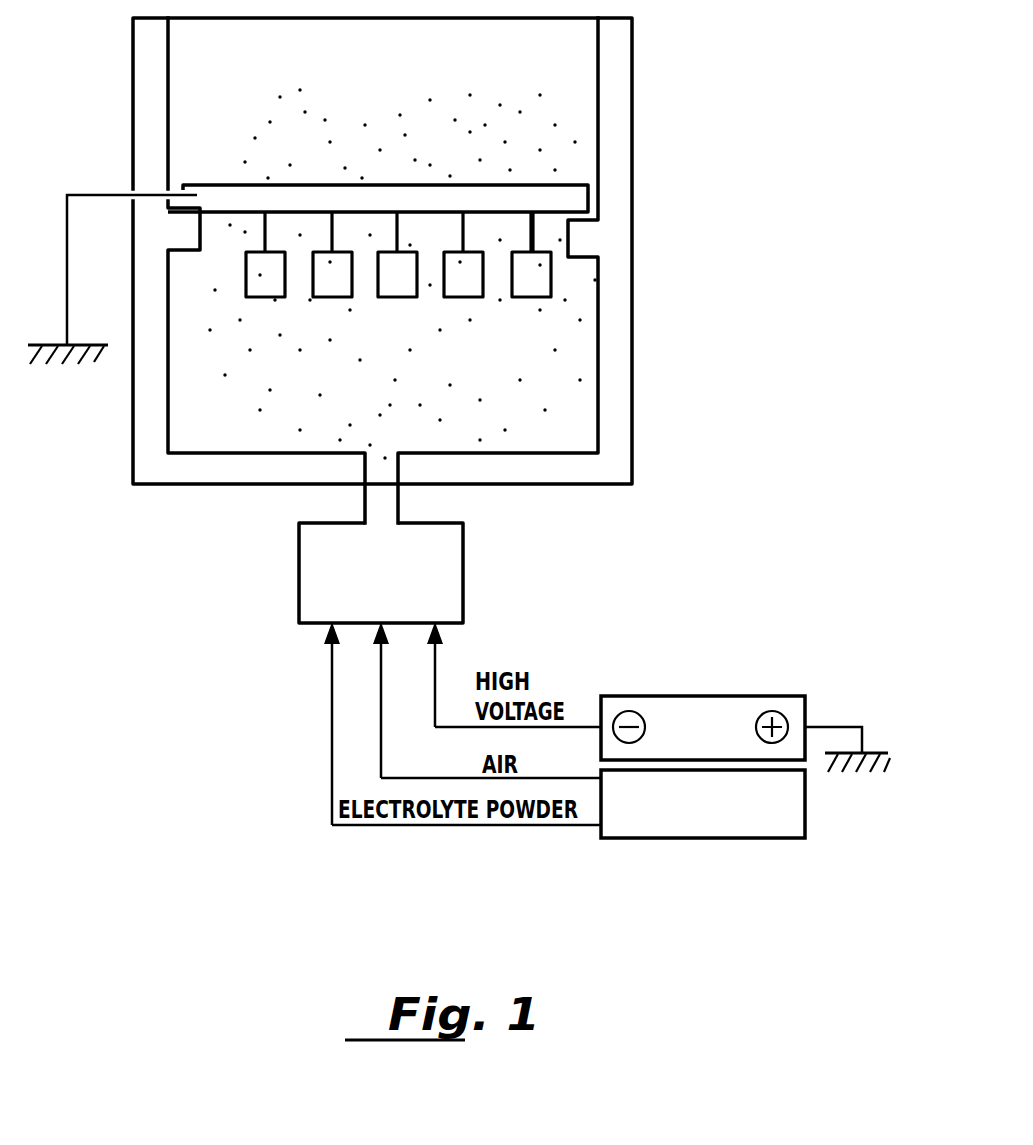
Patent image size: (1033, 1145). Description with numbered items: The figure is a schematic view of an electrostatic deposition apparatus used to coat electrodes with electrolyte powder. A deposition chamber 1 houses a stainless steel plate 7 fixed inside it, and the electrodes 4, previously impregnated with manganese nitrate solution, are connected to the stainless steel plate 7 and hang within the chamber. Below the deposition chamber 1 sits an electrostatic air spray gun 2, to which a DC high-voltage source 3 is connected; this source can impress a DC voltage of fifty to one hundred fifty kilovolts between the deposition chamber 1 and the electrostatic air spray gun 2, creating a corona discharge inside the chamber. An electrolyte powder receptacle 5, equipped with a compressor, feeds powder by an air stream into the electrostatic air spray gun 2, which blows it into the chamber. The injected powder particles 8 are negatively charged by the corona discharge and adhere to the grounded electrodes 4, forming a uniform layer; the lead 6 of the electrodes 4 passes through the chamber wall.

The deposition chamber 1 is at (615, 78).
The electrostatic air spray gun 2 is at (446, 567).
The DC high-voltage source 3 is at (697, 713).
The electrodes 4 is at (530, 282).
The electrolyte powder receptacle 5 is at (687, 819).
The electrode lead 6 is at (533, 235).
The stainless steel plate 7 is at (300, 197).
The electrolyte powder particles 8 is at (482, 353).